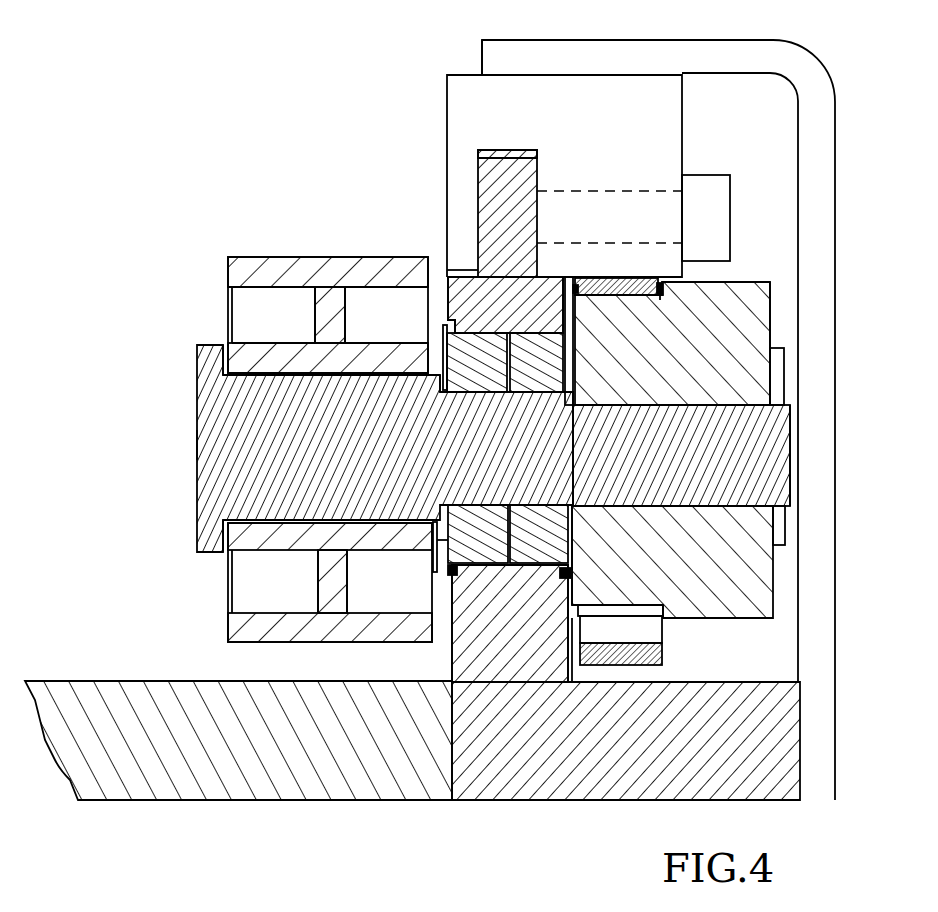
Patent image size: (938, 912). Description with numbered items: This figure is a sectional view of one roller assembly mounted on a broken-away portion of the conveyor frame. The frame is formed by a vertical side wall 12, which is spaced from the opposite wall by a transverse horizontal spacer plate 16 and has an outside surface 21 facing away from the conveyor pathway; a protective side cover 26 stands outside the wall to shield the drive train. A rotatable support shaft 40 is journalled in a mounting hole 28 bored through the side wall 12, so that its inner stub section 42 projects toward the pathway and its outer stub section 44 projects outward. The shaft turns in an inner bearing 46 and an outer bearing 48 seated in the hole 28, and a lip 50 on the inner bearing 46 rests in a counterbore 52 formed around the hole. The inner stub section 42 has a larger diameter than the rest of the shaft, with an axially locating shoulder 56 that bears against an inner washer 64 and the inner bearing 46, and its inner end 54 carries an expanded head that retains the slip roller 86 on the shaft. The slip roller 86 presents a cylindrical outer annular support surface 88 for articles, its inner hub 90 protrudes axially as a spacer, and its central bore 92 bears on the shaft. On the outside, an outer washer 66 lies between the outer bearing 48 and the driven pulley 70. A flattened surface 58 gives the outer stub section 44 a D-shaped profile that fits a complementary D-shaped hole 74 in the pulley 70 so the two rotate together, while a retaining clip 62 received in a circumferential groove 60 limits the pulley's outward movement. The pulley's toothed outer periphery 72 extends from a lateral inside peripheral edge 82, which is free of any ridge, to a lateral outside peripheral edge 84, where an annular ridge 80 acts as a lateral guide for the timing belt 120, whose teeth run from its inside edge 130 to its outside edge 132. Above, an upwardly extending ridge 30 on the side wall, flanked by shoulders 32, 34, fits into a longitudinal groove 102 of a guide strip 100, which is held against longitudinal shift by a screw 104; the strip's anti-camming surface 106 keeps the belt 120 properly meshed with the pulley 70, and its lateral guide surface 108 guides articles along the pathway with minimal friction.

The side wall 12 is at (562, 802).
The spacer plate 16 is at (395, 800).
The outside surface 21 is at (505, 305).
The protective side cover 26 is at (808, 182).
The mounting hole 28 is at (510, 623).
The ridge 30 is at (527, 160).
The shoulder 32 is at (456, 275).
The shoulder 34 is at (545, 277).
The support shaft 40 is at (196, 440).
The inner stub section 42 is at (222, 410).
The outer stub section 44 is at (768, 478).
The inner bearing 46 is at (440, 550).
The outer bearing 48 is at (560, 552).
The lip 50 is at (445, 585).
The counterbore 52 is at (460, 572).
The inner end 54 is at (200, 366).
The locating shoulder 56 is at (440, 392).
The flattened surface 58 is at (792, 430).
The circumferential groove 60 is at (786, 518).
The retaining clip 62 is at (792, 524).
The inner washer 64 is at (443, 332).
The outer washer 66 is at (578, 532).
The driven pulley 70 is at (762, 345).
The outer periphery 72 is at (740, 281).
The D-shaped hole 74 is at (778, 396).
The annular ridge 80 is at (664, 290).
The inside peripheral edge 82 is at (575, 292).
The outside peripheral edge 84 is at (774, 304).
The slip roller 86 is at (245, 272).
The outer annular support surface 88 is at (295, 258).
The inner hub 90 is at (243, 356).
The central bore 92 is at (290, 360).
The guide strip 100 is at (530, 95).
The longitudinal groove 102 is at (490, 148).
The screw 104 is at (690, 175).
The anti-camming surface 106 is at (620, 277).
The lateral guide surface 108 is at (447, 120).
The timing belt 120 is at (662, 655).
The inside edge 130 is at (578, 292).
The outside edge 132 is at (660, 297).